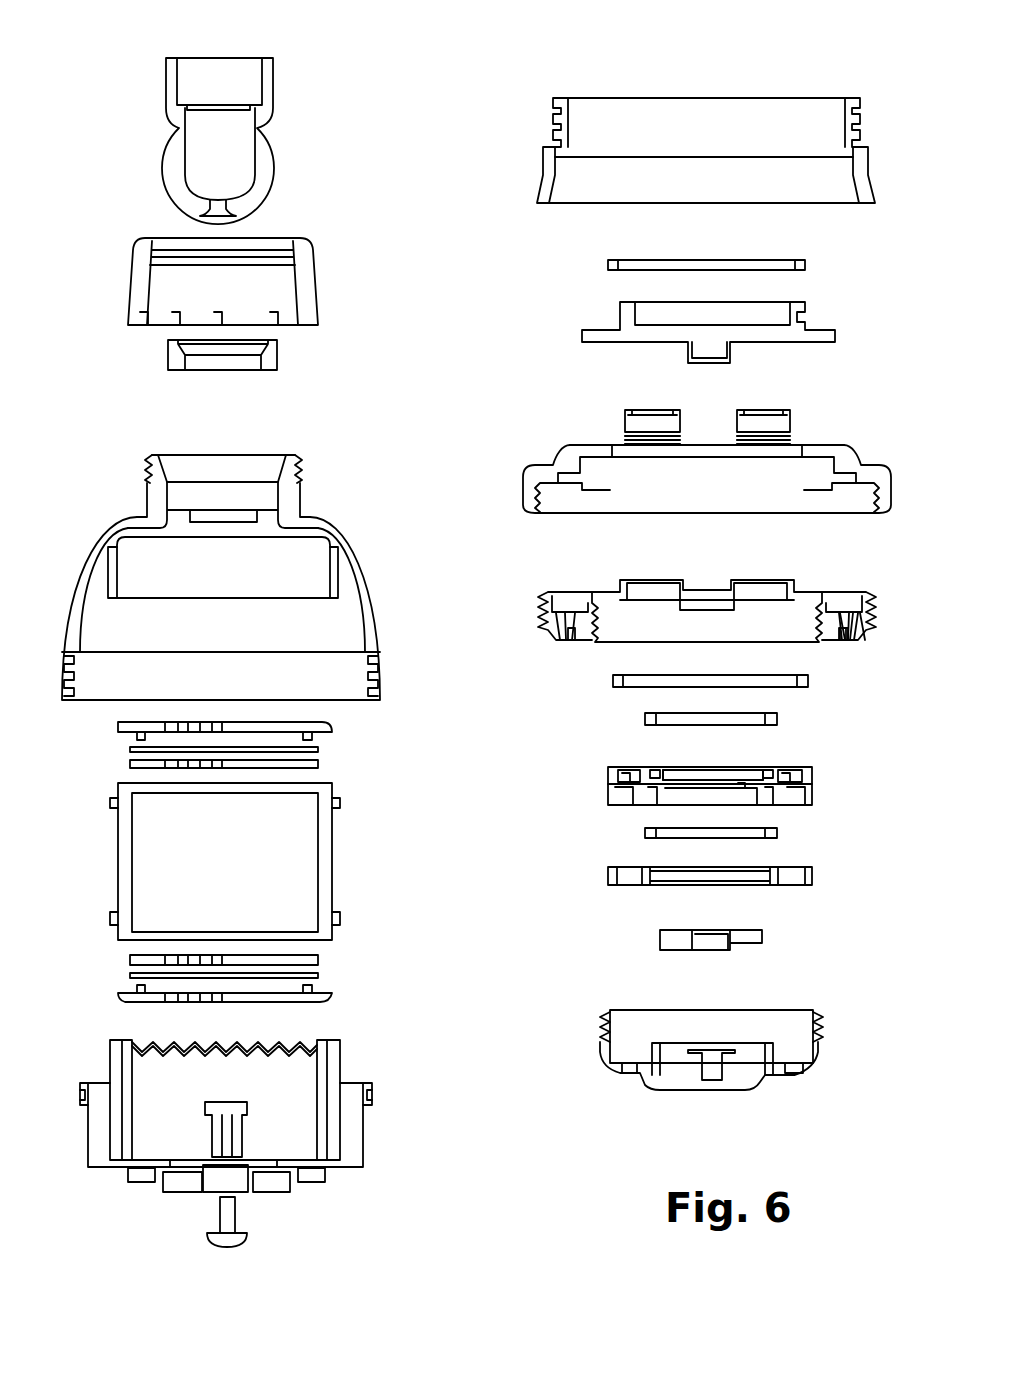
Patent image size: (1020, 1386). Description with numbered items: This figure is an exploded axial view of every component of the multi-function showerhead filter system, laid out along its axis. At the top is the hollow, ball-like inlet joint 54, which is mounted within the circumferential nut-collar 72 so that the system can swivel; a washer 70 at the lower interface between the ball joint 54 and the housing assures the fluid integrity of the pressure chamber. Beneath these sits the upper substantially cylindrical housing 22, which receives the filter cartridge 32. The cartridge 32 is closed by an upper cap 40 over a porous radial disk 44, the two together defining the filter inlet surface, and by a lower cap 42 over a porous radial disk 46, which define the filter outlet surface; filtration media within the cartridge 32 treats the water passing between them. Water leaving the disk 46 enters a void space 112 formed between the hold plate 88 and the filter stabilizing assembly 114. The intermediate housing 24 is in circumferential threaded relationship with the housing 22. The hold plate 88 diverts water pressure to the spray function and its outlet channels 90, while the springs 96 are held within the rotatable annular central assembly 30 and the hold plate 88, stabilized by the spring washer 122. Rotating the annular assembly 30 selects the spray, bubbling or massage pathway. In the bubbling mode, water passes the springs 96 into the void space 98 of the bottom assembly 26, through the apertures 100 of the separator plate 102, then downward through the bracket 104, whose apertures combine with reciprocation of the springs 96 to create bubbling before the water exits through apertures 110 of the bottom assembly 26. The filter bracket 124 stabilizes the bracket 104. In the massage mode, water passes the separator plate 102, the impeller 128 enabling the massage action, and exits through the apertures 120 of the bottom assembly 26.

The inlet joint 54 is at (274, 158).
The nut-collar 72 is at (141, 276).
The washer 70 is at (168, 355).
The upper cylindrical housing 22 is at (366, 566).
The upper cap 40 is at (118, 724).
The porous radial disk 44 is at (319, 767).
The filter cartridge 32 is at (118, 844).
The lower cap 42 is at (133, 961).
The porous radial disk 46 is at (331, 997).
The filter stabilizing assembly 114 is at (82, 1105).
The void space 112 is at (299, 1184).
The intermediate housing 24 is at (561, 98).
The hold plate 88 is at (620, 320).
The spring washer 122 is at (625, 410).
The springs 96 is at (625, 440).
The rotatable annular central assembly 30 is at (524, 500).
The void space 98 is at (618, 636).
The outlet channels 90 is at (863, 641).
The apertures 100 is at (637, 768).
The separator plate 102 is at (608, 781).
The filter bracket 124 is at (645, 833).
The bracket 104 is at (813, 873).
The bottom assembly 26 is at (711, 1073).
The apertures 110 is at (623, 1073).
The impeller 128 is at (672, 1071).
The apertures 120 is at (793, 1074).